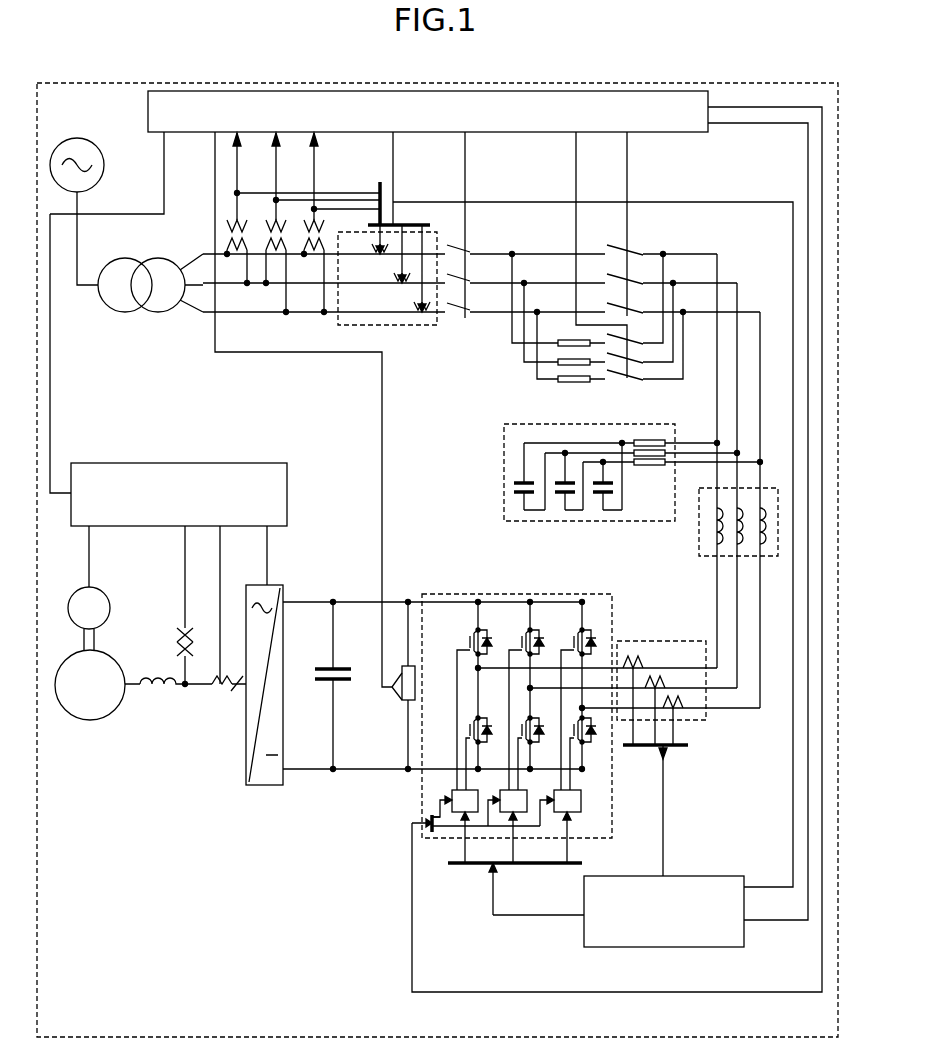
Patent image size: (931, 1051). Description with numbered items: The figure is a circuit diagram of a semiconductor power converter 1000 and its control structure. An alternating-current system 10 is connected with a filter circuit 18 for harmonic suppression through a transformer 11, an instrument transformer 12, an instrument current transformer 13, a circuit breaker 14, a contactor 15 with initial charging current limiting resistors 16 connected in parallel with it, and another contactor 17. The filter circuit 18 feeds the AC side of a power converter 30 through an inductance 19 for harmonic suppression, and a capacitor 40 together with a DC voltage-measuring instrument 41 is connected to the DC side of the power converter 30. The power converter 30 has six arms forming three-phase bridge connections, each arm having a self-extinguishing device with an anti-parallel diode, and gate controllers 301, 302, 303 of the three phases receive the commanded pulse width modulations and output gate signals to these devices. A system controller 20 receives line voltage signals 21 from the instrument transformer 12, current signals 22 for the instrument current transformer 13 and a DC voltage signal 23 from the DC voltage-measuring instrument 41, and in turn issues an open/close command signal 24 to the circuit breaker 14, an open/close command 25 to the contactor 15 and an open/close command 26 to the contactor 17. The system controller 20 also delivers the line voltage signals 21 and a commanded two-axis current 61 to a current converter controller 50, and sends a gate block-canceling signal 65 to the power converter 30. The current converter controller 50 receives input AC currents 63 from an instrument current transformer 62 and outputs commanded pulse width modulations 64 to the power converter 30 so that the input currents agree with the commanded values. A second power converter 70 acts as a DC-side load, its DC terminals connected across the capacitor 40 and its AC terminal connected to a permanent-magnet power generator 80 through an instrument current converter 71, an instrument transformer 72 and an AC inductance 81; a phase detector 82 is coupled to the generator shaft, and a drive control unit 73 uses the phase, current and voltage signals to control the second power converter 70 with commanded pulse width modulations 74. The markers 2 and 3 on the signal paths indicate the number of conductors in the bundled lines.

The semiconductor power converter 1000 is at (93, 83).
The system controller 20 is at (690, 91).
The alternating-current system 10 is at (104, 167).
The transformer 11 is at (158, 312).
The instrument transformer 12 is at (229, 224).
The instrument current transformer 13 is at (424, 328).
The circuit breaker 14 is at (481, 250).
The contactor 15 is at (639, 252).
The initial charging current limiting resistors 16 is at (575, 383).
The contactor 17 is at (627, 385).
The filter circuit 18 is at (504, 483).
The inductance 19 is at (699, 538).
The line voltage signals 21 is at (546, 202).
The current signals 22 is at (397, 157).
The DC voltage signal 23 is at (382, 452).
The open/close command signal 24 is at (470, 157).
The open/close command 25 is at (631, 157).
The open/close command 26 is at (580, 157).
The power converter 30 is at (584, 594).
The capacitor 40 is at (342, 667).
The DC voltage-measuring instrument 41 is at (399, 703).
The current converter controller 50 is at (716, 876).
The commanded two-axis current 61 is at (790, 922).
The instrument current transformer 62 is at (652, 645).
The input AC currents 63 is at (667, 806).
The commanded pulse width modulations 64 is at (506, 921).
The gate block-canceling signal 65 is at (412, 943).
The second power converter 70 is at (288, 600).
The instrument current converter 71 is at (221, 700).
The instrument transformer 72 is at (178, 627).
The drive control unit 73 is at (204, 463).
The commanded pulse width modulations 74 is at (270, 544).
The permanent-magnet power generator 80 is at (92, 720).
The AC inductance 81 is at (150, 668).
The phase detector 82 is at (98, 589).
The gate controller 301 is at (452, 797).
The gate controller 302 is at (540, 789).
The gate controller 303 is at (584, 806).
The signal lines 2 is at (772, 912).
The three-phase lines 3 is at (402, 213).